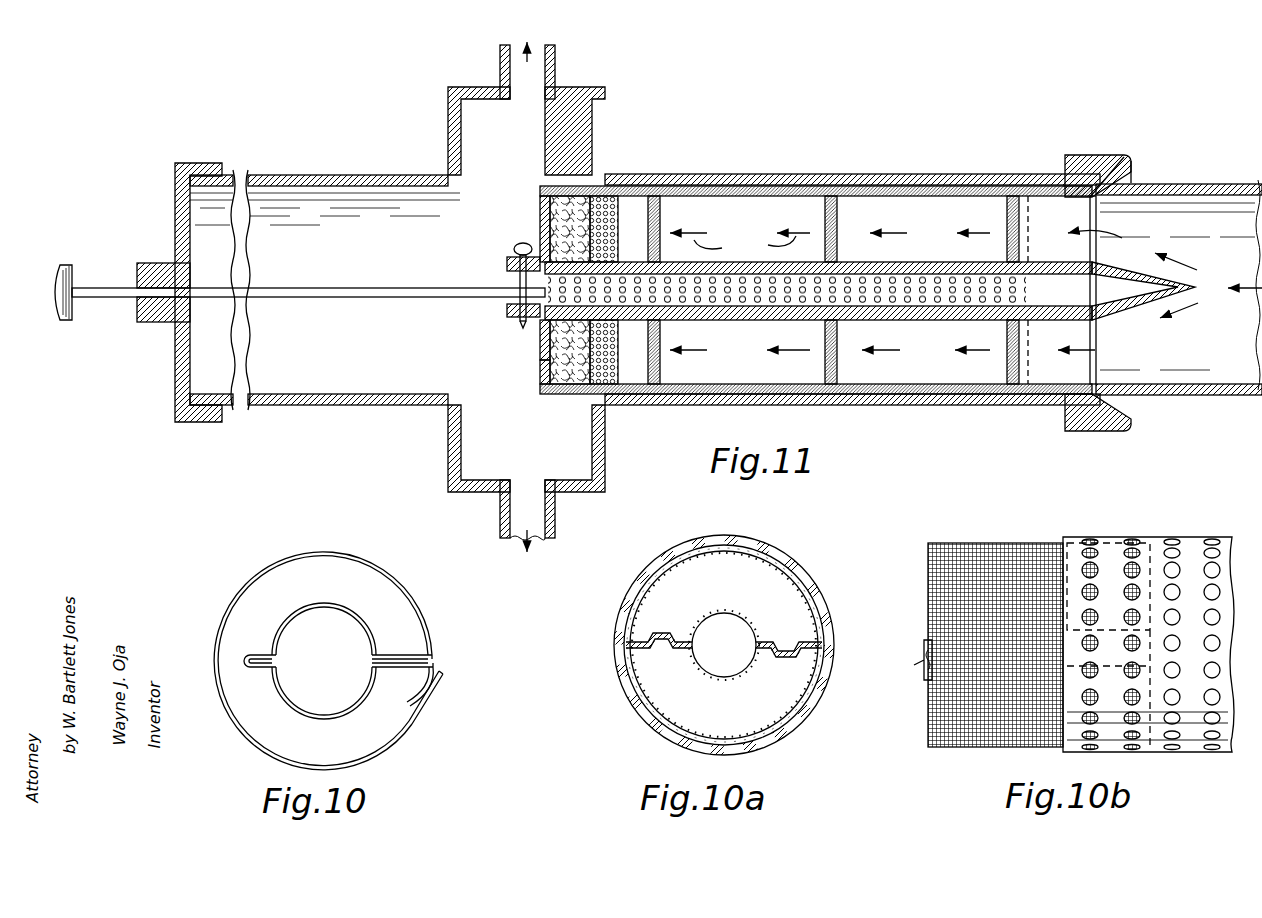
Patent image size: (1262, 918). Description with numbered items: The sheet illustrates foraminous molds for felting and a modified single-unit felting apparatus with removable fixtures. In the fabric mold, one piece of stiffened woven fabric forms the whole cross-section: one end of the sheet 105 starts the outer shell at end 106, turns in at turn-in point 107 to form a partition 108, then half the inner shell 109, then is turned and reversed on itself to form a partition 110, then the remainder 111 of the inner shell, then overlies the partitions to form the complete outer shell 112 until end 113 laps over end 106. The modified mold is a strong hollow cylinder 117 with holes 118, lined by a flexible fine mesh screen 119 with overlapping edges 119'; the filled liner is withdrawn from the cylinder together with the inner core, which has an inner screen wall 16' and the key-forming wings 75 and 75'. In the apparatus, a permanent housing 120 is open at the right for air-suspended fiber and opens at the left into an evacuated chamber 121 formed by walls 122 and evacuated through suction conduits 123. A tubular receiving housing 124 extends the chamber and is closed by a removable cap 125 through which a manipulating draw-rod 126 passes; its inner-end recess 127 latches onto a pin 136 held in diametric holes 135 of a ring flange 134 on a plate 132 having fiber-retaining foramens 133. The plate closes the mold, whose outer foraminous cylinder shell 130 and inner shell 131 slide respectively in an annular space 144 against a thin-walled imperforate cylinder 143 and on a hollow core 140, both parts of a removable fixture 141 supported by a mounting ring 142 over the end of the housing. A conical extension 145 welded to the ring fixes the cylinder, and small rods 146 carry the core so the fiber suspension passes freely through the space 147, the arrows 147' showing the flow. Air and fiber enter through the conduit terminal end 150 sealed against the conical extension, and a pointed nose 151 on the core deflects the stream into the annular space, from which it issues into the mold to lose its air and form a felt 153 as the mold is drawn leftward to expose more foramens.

In FIG. 10, the sheet 105 is at (380, 563).
In FIG. 10, the starting end of outer shell 106 is at (408, 704).
In FIG. 10, the turn-in point 107 is at (440, 664).
In FIG. 10, the partition 108 is at (395, 668).
In FIG. 10, the half of inner shell 109 is at (320, 710).
In FIG. 10, the partition 110 is at (248, 655).
In FIG. 10, the remainder of inner shell 111 is at (318, 607).
In FIG. 10, the outer shell 112 is at (255, 748).
In FIG. 10, the end of sheet 113 is at (445, 681).
In FIG. 10A, the hollow cylinder 117 is at (692, 544).
In FIG. 10B, the hollow cylinder 117 is at (1158, 537).
In FIG. 10A, the holes 118 is at (780, 546).
In FIG. 10B, the holes 118 is at (1130, 568).
In FIG. 10A, the fine mesh screen 119 is at (724, 645).
In FIG. 10B, the fine mesh screen 119 is at (994, 629).
In FIG. 10A, the overlapping edges 119' is at (753, 645).
In FIG. 10B, the overlapping edges 119' is at (901, 662).
In FIG. 10A, the inner screen wall 16' is at (724, 631).
In FIG. 10A, the key-forming wing 75 is at (789, 668).
In FIG. 10A, the key-forming wing 75' is at (659, 623).
In FIG. 11, the permanent housing 120 is at (724, 174).
In FIG. 11, the evacuated chamber 121 is at (512, 443).
In FIG. 11, the walls 122 is at (448, 120).
In FIG. 11, the suction conduit 123 is at (555, 60).
In FIG. 11, the tubular receiving housing 124 is at (337, 406).
In FIG. 11, the removable cap 125 is at (178, 196).
In FIG. 11, the draw-rod 126 is at (262, 296).
In FIG. 11, the recess 127 is at (515, 298).
In FIG. 11, the outer foraminous cylinder shell 130 is at (576, 190).
In FIG. 11, the inner shell 131 is at (722, 294).
In FIG. 11, the plate 132 is at (540, 370).
In FIG. 11, the fiber-retaining foramens 133 is at (540, 362).
In FIG. 11, the ring flange 134 is at (507, 266).
In FIG. 11, the diametric holes 135 is at (520, 325).
In FIG. 11, the pin 136 is at (522, 243).
In FIG. 11, the hollow core 140 is at (902, 313).
In FIG. 11, the removable fixture 141 is at (1122, 404).
In FIG. 11, the mounting ring 142 is at (1094, 156).
In FIG. 11, the imperforate cylinder 143 is at (1061, 200).
In FIG. 11, the annular space 144 is at (1042, 188).
In FIG. 11, the conical extension 145 is at (1128, 176).
In FIG. 11, the rods 146 is at (660, 362).
In FIG. 11, the space 147 is at (882, 250).
In FIG. 11, the arrows 147' is at (745, 247).
In FIG. 11, the conduit terminal end 150 is at (1206, 184).
In FIG. 11, the pointed nose 151 is at (1143, 308).
In FIG. 11, the felt 153 is at (575, 380).